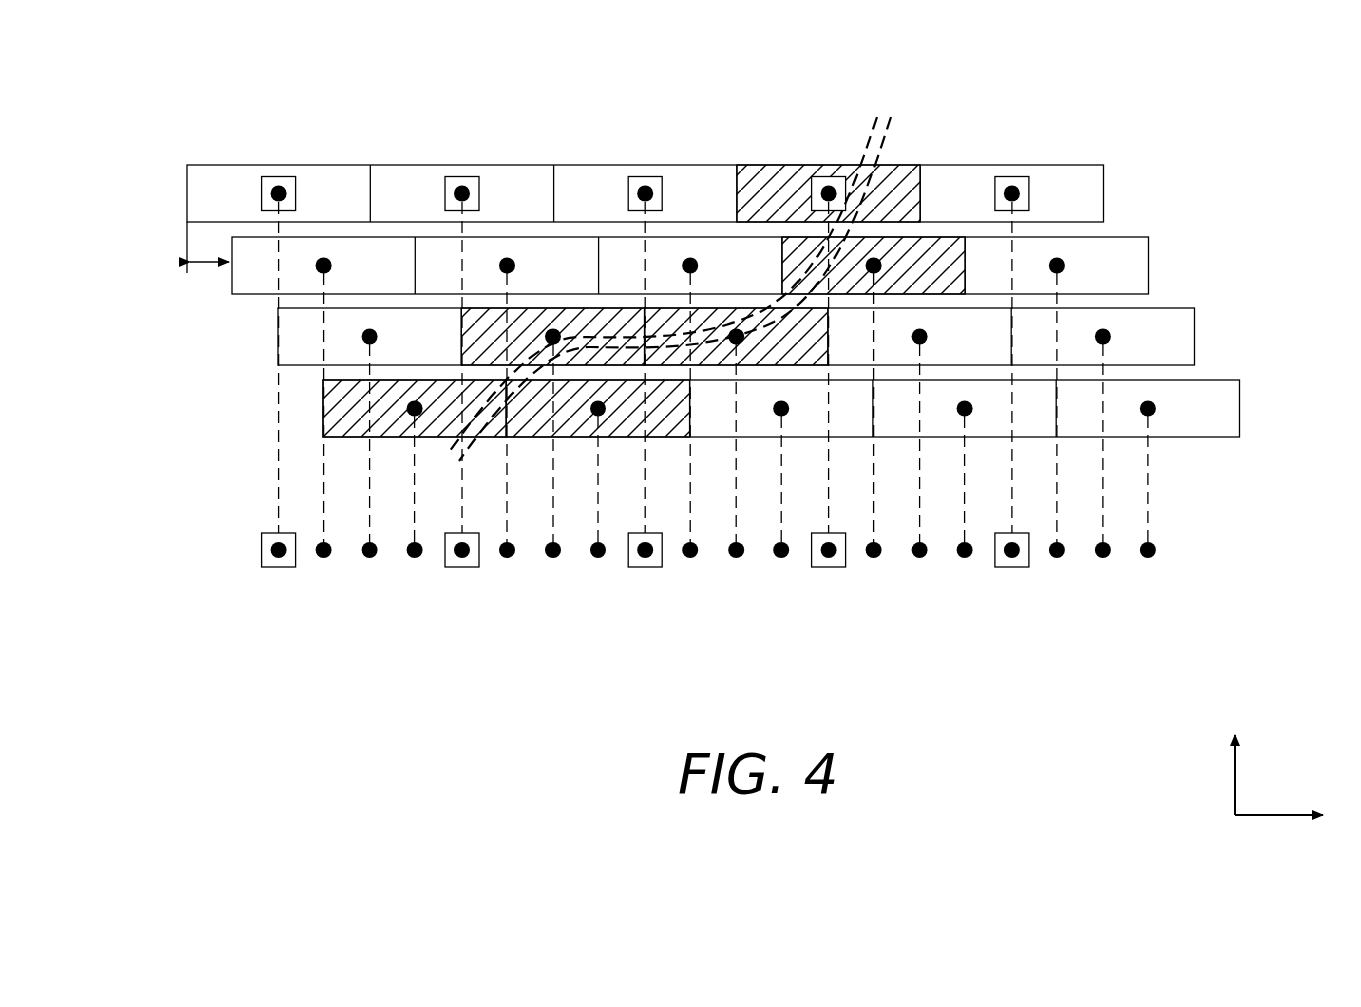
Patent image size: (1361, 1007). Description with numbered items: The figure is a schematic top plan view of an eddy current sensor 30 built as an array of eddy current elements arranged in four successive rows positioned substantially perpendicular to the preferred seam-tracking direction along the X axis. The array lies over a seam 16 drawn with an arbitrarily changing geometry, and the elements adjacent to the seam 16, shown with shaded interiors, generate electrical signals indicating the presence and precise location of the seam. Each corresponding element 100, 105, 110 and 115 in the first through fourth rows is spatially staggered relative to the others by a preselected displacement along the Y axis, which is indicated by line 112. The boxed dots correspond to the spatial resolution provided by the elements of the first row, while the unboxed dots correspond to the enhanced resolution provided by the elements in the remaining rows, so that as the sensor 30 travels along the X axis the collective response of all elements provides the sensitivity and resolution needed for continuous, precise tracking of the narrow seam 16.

The eddy current sensor 30 is at (701, 63).
The eddy current element 100 is at (218, 183).
The eddy current element 105 is at (253, 289).
The eddy current element 110 is at (278, 344).
The eddy current element 115 is at (323, 407).
The line 112 is at (200, 268).
The seam 16 is at (893, 128).